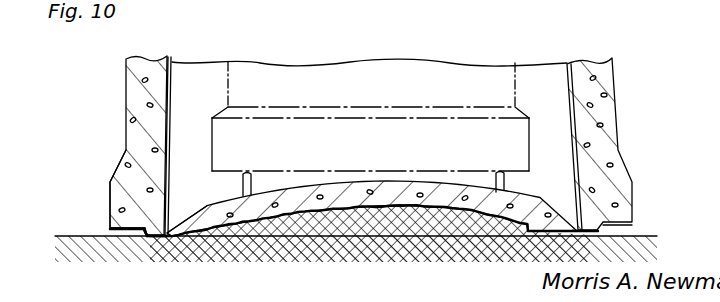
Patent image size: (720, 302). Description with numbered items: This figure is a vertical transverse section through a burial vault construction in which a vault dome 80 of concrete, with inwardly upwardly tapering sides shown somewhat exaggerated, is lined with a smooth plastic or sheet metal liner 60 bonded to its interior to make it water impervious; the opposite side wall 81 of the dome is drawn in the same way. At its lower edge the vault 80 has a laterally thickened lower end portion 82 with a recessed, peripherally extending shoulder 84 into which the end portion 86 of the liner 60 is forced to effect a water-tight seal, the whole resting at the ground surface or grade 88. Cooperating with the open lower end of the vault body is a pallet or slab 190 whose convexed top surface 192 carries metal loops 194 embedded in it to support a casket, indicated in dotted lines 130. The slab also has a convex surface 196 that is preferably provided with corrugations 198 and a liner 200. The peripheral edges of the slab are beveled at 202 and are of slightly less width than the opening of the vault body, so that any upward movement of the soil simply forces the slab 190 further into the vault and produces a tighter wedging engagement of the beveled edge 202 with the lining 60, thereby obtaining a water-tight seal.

The liner 60 is at (172, 82).
The vault 80 is at (137, 98).
The opposite foundation wall 81 is at (599, 144).
The laterally thickened lower end portion 82 is at (122, 195).
The recessed peripherally extending shoulder 84 is at (146, 236).
The end portion of the liner 86 is at (125, 229).
The grade line 88 is at (653, 235).
The casket 130 is at (417, 75).
The pallet or slab 190 is at (392, 192).
The convexed top surface 192 is at (320, 186).
The metal loops 194 is at (249, 173).
The convex surface 196 is at (453, 210).
The corrugations 198 is at (275, 211).
The liner 200 is at (312, 211).
The beveled edges 202 is at (182, 224).